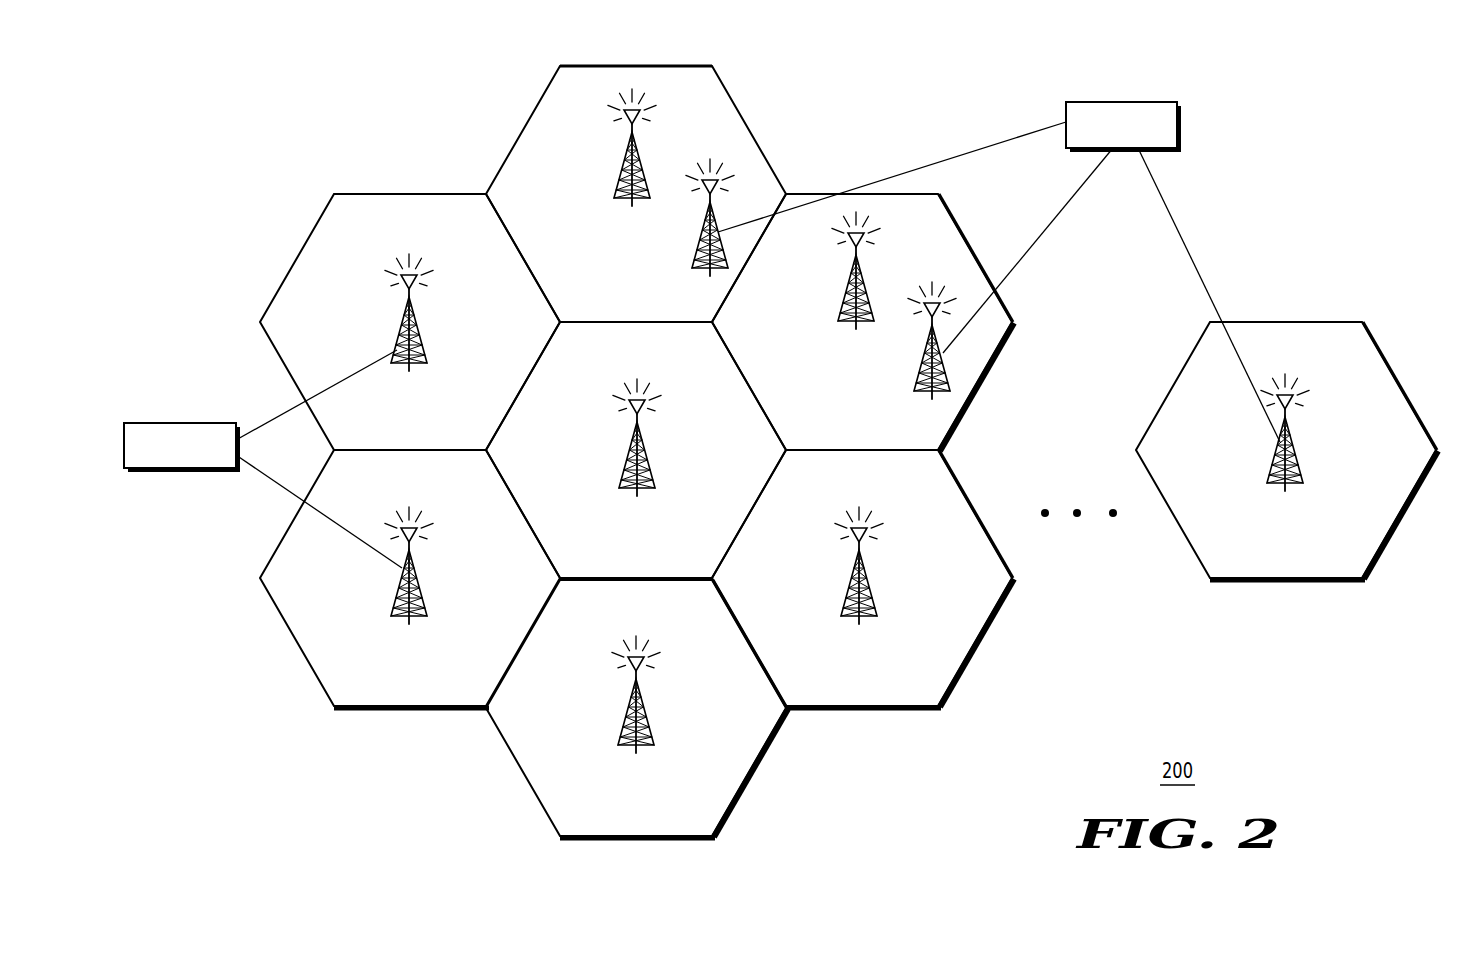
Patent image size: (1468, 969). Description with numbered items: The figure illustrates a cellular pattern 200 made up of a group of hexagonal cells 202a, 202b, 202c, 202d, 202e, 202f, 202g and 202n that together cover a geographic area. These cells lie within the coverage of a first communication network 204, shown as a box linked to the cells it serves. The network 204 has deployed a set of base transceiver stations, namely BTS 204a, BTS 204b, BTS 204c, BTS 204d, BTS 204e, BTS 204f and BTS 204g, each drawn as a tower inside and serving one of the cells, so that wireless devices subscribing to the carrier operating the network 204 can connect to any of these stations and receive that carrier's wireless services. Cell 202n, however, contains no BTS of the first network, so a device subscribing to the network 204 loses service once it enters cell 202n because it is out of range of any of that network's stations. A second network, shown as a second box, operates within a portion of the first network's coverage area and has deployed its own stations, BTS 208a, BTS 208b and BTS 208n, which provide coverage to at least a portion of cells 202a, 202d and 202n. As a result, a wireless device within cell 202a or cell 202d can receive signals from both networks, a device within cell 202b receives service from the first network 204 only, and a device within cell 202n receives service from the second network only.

The cellular pattern 200 is at (1122, 102).
The communication network 204 is at (180, 423).
The cell 202a is at (636, 194).
The cell 202b is at (410, 322).
The cell 202c is at (636, 450).
The cell 202d is at (863, 322).
The cell 202e is at (410, 579).
The cell 202f is at (637, 709).
The cell 202g is at (863, 579).
The cell 202n is at (1287, 451).
The BTS 204a is at (622, 163).
The BTS 204b is at (399, 327).
The BTS 204c is at (627, 452).
The BTS 204d is at (846, 285).
The BTS 204e is at (399, 580).
The BTS 204f is at (626, 712).
The BTS 204g is at (849, 583).
The BTS 208a is at (700, 250).
The BTS 208b is at (922, 372).
The BTS 208n is at (1275, 447).